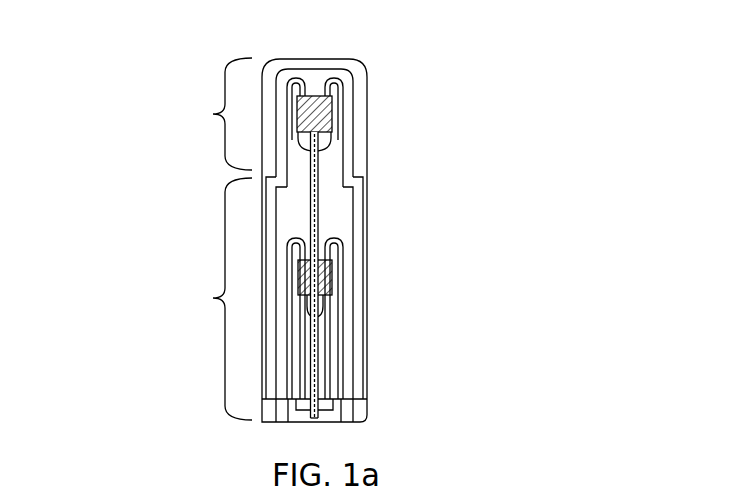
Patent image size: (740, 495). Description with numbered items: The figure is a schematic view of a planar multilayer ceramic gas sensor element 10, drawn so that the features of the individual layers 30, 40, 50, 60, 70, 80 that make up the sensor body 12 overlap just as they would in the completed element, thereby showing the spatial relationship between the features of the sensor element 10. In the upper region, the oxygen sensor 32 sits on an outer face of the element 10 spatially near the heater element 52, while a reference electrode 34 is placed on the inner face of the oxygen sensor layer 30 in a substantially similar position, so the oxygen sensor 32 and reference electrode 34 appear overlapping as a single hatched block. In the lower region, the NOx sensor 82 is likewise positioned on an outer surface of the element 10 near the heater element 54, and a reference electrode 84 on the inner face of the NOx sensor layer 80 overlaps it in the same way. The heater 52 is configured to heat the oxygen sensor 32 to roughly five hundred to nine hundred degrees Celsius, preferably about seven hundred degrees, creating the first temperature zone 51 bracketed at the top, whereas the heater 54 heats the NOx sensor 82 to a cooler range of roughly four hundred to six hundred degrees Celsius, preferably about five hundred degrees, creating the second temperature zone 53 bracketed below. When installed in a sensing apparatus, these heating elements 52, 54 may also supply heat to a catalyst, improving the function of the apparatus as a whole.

The multilayer gas sensor element 10 is at (118, 51).
The sensor body 12 is at (367, 83).
The oxygen sensor layer 30 is at (445, 226).
The layer 40 is at (445, 226).
The layer 50 is at (445, 226).
The layer 60 is at (445, 226).
The layer 70 is at (445, 226).
The NOx sensor layer 80 is at (397, 142).
The oxygen sensor 32 is at (352, 81).
The reference electrode 34 is at (320, 96).
The first temperature zone 51 is at (207, 114).
The heater element 52 is at (353, 130).
The second temperature zone 53 is at (207, 299).
The heater element 54 is at (343, 333).
The NOx sensor 82 is at (378, 277).
The reference electrode 84 is at (332, 275).